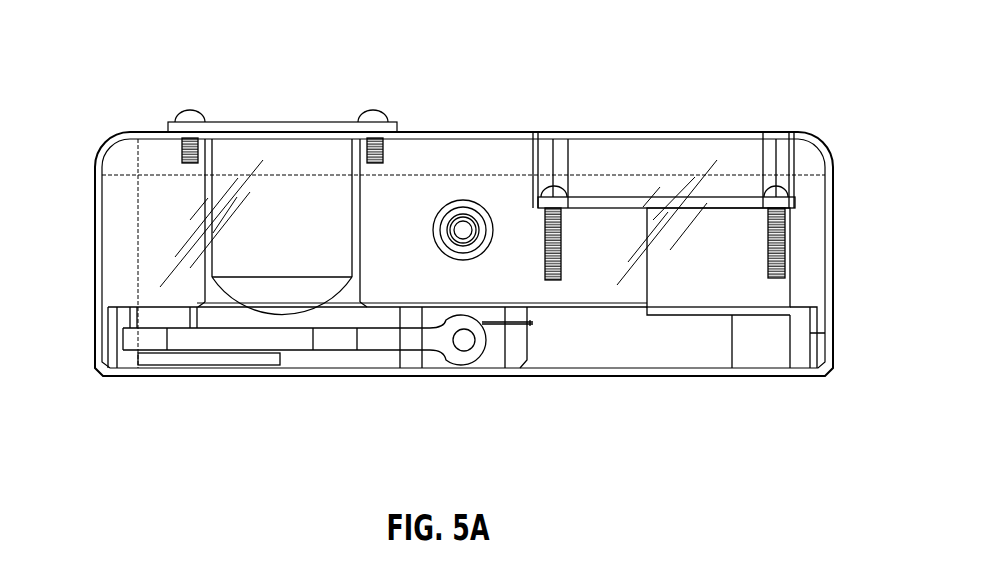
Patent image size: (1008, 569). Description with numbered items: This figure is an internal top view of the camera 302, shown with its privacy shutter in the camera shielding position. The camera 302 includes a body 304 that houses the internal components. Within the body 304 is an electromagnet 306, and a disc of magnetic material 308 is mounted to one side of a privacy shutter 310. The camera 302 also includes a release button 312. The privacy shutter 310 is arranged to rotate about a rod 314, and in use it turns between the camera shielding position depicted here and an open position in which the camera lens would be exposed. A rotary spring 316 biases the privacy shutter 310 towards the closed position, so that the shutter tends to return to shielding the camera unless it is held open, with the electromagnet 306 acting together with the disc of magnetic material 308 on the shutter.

The camera 302 is at (192, 38).
The body 304 is at (752, 132).
The electromagnet 306 is at (788, 277).
The disc of magnetic material 308 is at (218, 355).
The privacy shutter 310 is at (130, 337).
The release button 312 is at (465, 212).
The rod 314 is at (463, 345).
The rotary spring 316 is at (512, 325).